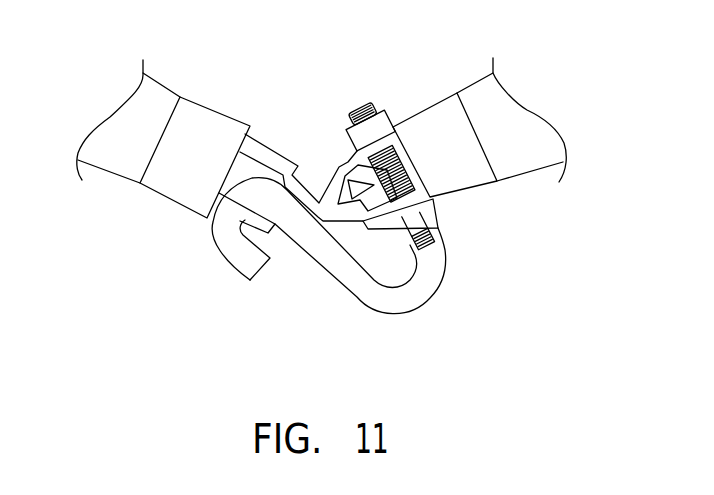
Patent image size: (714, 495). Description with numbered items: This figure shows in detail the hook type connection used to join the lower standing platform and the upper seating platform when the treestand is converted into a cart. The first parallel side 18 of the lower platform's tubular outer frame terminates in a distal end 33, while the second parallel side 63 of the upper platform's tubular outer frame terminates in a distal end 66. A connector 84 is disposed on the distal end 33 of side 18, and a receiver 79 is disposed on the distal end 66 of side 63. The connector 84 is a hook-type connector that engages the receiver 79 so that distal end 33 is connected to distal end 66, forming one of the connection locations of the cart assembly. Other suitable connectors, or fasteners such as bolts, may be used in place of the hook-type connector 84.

The second parallel side 63 is at (138, 147).
The distal end 66 is at (197, 144).
The distal end 33 is at (430, 129).
The first parallel side 18 is at (503, 145).
The receiver 79 is at (285, 145).
The connector 84 is at (342, 264).